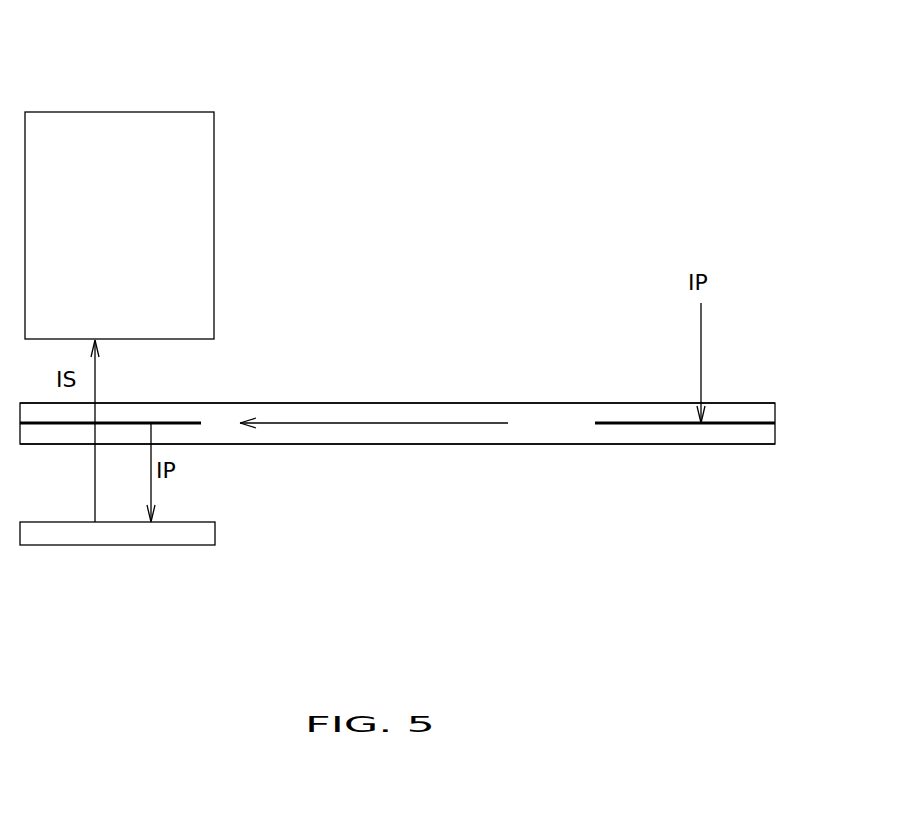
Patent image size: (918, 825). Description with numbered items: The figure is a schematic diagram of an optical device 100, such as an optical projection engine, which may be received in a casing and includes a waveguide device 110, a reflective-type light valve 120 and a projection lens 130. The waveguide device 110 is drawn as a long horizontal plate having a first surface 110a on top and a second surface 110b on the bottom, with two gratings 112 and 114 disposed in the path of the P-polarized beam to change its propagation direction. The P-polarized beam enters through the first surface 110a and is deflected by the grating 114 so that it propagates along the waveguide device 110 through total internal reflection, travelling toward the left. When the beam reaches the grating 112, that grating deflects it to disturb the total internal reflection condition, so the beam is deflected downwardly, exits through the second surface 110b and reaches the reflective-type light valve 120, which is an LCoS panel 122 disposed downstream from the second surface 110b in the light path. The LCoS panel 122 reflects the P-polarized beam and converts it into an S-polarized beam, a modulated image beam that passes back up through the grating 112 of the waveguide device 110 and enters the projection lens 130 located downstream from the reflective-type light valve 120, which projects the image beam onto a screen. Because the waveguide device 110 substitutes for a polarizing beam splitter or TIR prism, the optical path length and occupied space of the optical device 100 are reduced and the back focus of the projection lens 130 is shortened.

The optical device 100 is at (72, 31).
The waveguide device 110 is at (362, 395).
The first surface 110a is at (433, 403).
The second surface 110b is at (410, 444).
The grating 112 is at (185, 423).
The grating 114 is at (612, 423).
The reflective-type light valve 120 is at (212, 528).
The LCoS panel 122 is at (215, 532).
The projection lens 130 is at (214, 197).